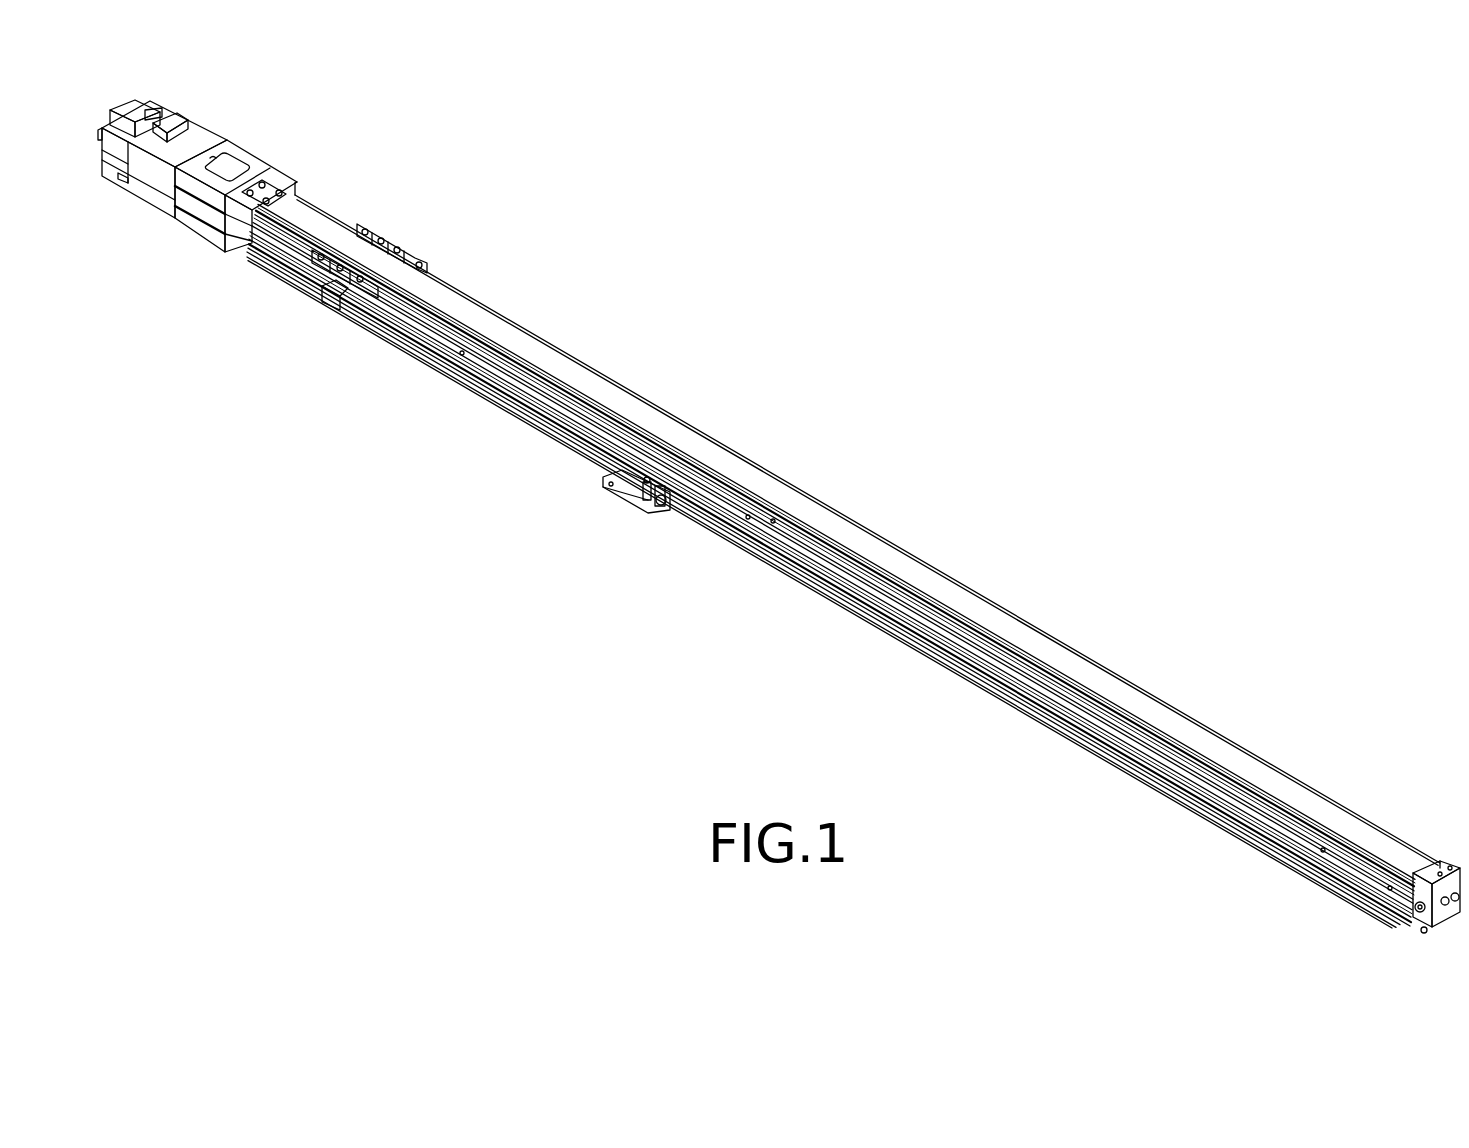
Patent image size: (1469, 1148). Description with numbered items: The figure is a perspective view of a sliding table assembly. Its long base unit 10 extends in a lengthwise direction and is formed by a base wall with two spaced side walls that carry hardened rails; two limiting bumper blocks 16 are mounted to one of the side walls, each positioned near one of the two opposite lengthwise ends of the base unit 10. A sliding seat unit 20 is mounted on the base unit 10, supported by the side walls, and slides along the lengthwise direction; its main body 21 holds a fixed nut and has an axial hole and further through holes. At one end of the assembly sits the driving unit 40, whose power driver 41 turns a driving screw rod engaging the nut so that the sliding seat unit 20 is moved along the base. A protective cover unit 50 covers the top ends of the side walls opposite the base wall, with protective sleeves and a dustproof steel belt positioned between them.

The base unit 10 is at (482, 422).
The limiting bumper blocks 16 is at (353, 228).
The sliding seat unit 20 is at (454, 248).
The main body 21 is at (430, 245).
The driving unit 40 is at (240, 159).
The power driver 41 is at (210, 127).
The protective cover unit 50 is at (785, 461).